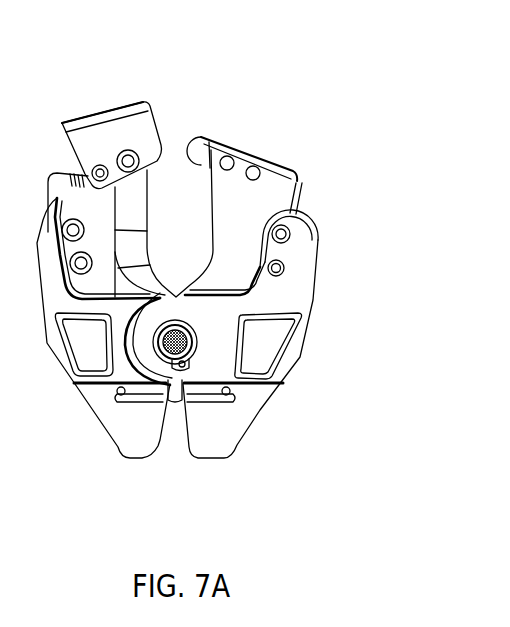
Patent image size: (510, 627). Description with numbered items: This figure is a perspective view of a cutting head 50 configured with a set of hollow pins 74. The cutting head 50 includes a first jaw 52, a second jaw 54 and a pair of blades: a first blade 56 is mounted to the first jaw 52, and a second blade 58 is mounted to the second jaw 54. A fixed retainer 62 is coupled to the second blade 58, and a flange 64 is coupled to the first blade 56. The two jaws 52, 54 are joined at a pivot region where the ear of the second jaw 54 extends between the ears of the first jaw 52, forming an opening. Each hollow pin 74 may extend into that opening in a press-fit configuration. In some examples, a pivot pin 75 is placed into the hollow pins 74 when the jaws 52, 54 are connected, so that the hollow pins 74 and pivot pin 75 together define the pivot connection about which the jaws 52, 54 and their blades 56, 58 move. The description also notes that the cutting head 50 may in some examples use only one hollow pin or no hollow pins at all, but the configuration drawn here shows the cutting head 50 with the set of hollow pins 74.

The cutting head 50 is at (198, 108).
The first jaw 52 is at (290, 350).
The second jaw 54 is at (62, 347).
The first blade 56 is at (298, 182).
The second blade 58 is at (54, 178).
The fixed retainer 62 is at (74, 126).
The flange 64 is at (246, 145).
The hollow pin 74 is at (174, 320).
The pivot pin 75 is at (197, 328).